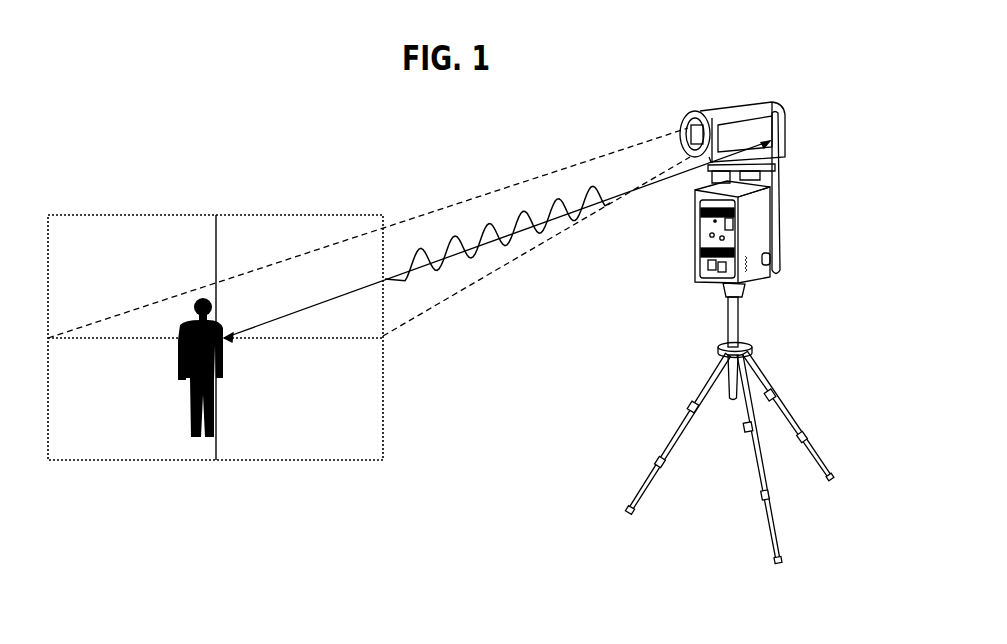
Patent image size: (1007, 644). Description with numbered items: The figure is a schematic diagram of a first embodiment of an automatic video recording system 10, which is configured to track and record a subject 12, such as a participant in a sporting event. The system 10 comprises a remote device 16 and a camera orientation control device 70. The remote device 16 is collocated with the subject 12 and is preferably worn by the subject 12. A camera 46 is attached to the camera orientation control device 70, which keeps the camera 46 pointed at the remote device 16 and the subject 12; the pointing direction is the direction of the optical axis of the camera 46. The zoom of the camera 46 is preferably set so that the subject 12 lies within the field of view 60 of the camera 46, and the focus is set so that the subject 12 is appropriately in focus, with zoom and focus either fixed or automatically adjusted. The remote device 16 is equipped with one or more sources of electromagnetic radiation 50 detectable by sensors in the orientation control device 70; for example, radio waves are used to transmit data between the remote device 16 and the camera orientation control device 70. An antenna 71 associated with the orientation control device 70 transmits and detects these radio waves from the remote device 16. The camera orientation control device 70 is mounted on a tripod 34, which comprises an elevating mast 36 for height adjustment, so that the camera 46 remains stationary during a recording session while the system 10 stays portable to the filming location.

The automatic video recording system 10 is at (411, 552).
The subject 12 is at (183, 325).
The remote device 16 is at (224, 343).
The tripod 34 is at (785, 408).
The elevating mast 36 is at (739, 313).
The camera 46 is at (730, 112).
The electromagnetic radiation 50 is at (392, 282).
The field of view 60 is at (505, 186).
The camera orientation control device 70 is at (757, 262).
The antenna 71 is at (780, 165).